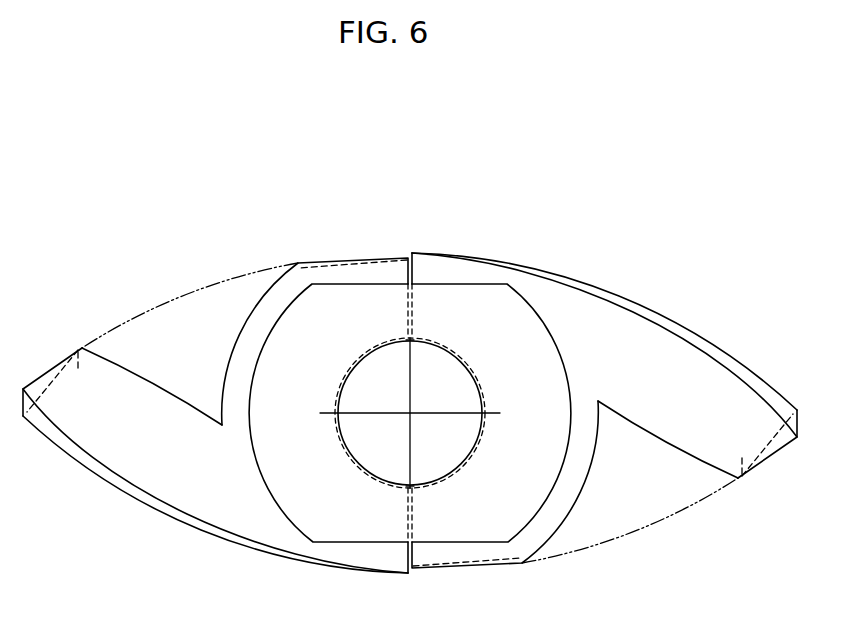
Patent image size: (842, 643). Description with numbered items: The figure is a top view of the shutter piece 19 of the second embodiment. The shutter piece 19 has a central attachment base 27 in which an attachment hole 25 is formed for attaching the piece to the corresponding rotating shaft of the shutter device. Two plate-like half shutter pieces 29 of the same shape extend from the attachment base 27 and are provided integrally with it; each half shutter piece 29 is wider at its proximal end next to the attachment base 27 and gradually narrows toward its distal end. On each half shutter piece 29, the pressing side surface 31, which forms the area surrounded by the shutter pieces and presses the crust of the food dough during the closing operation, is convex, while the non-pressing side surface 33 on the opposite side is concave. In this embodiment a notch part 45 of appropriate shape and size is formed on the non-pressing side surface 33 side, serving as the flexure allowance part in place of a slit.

The shutter piece 19 is at (473, 252).
The attachment hole 25 is at (358, 382).
The attachment base 27 is at (369, 295).
The half shutter piece 29 is at (582, 315).
The pressing side surface 31 is at (718, 352).
The non-pressing side surface 33 is at (68, 347).
The notch part 45 is at (173, 333).